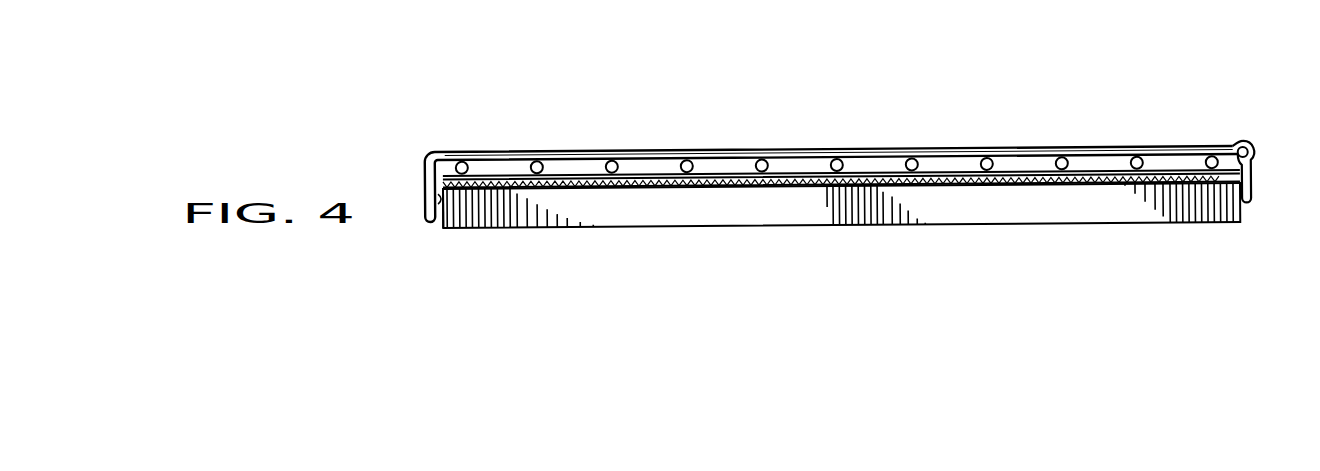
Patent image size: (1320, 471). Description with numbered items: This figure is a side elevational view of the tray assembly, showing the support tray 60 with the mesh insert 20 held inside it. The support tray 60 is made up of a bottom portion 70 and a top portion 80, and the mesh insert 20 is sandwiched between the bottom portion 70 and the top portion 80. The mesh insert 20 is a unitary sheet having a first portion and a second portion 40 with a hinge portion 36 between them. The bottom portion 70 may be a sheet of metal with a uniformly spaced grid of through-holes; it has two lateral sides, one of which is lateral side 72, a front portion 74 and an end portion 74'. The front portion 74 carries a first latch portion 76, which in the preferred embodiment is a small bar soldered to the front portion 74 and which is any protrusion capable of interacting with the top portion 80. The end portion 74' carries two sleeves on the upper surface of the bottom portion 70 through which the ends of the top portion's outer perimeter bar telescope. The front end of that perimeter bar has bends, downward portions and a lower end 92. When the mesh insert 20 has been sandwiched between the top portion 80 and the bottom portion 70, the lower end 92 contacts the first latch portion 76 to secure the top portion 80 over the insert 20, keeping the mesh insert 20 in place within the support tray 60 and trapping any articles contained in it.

The mesh insert 20 is at (567, 174).
The hinge portion 36 is at (1233, 152).
The second portion 40 is at (1084, 166).
The support tray 60 is at (419, 166).
The bottom portion 70 is at (718, 237).
The lateral side 72 is at (998, 211).
The front portion 74 is at (525, 235).
The end portion 74' is at (1200, 230).
The first latch portion 76 is at (444, 224).
The top portion 80 is at (495, 144).
The lower end 92 is at (430, 222).